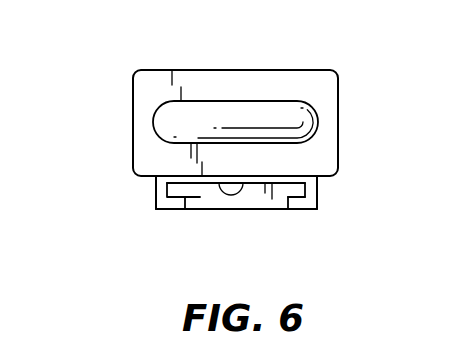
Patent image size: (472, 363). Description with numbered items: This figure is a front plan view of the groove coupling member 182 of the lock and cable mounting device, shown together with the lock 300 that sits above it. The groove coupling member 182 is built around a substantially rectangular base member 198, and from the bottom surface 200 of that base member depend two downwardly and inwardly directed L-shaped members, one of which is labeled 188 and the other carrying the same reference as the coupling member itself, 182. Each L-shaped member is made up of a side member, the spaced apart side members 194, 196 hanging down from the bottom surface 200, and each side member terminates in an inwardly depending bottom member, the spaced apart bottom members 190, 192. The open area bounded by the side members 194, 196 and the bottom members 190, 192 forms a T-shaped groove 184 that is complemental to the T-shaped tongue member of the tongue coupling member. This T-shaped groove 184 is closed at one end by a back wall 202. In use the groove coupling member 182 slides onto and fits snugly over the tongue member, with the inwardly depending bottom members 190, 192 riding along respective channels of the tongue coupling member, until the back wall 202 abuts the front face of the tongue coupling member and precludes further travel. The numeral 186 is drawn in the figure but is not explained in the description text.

The lock 300 is at (308, 70).
The bottom surface 200 is at (244, 184).
The groove coupling member 182 is at (141, 211).
The T-shaped groove 184 is at (258, 203).
The left leg 186 is at (165, 216).
The L-shaped member 188 is at (326, 211).
The bottom member 190 is at (177, 203).
The bottom member 192 is at (295, 210).
The side member 194 is at (157, 192).
The side member 196 is at (310, 192).
The base member 198 is at (192, 177).
The back wall 202 is at (205, 195).